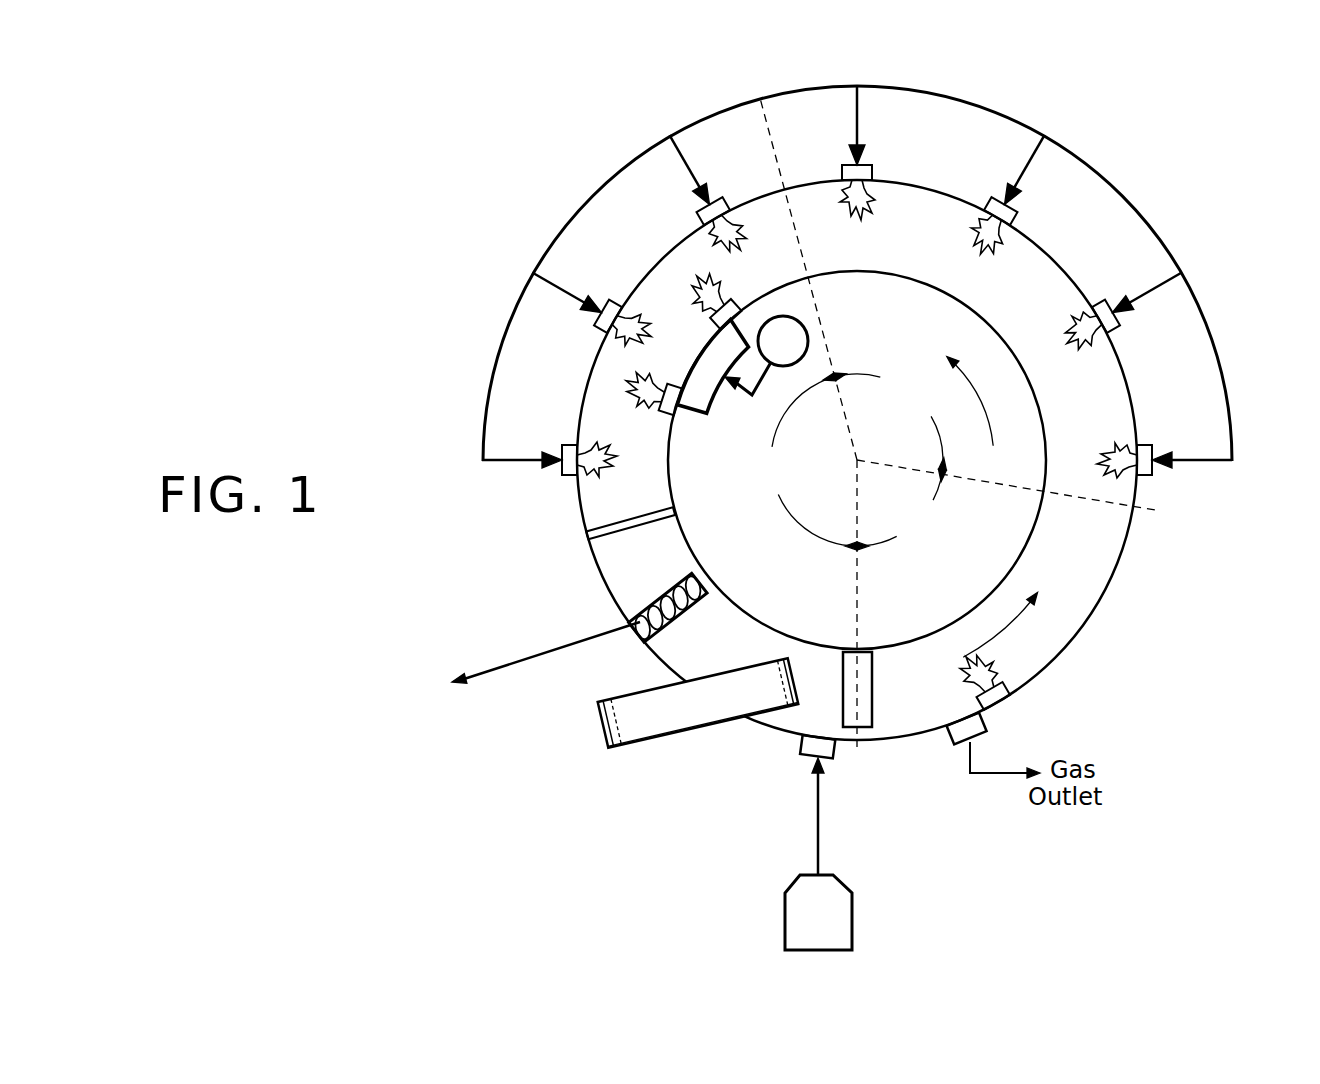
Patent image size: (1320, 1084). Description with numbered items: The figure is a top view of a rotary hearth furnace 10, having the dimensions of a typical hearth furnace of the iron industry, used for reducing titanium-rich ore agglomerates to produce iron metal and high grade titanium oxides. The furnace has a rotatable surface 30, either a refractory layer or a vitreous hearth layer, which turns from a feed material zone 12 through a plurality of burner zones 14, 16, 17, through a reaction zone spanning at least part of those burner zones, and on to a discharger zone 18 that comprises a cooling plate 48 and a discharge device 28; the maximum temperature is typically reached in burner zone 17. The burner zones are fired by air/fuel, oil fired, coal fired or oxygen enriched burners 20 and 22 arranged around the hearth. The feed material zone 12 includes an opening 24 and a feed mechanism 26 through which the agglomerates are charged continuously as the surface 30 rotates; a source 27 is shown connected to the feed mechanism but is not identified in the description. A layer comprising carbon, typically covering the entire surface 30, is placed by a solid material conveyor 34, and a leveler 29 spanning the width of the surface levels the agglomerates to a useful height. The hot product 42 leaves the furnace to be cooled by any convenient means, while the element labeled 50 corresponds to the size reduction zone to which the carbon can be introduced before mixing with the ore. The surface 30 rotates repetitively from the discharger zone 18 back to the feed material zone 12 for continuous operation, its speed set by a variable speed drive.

The furnace 10 is at (1112, 120).
The feed material zone 12 is at (903, 692).
The burner zone 14 is at (1118, 186).
The burner zone 16 is at (606, 186).
The burner zone 17 is at (603, 502).
The discharger zone 18 is at (677, 577).
The burners 20 is at (992, 250).
The burners 22 is at (517, 462).
The opening 24 is at (800, 752).
The feed mechanism 26 is at (815, 800).
The supply source 27 is at (828, 932).
The discharge device 28 is at (815, 843).
The leveler 29 is at (862, 730).
The surface 30 is at (1015, 627).
The solid material conveyor 34 is at (598, 730).
The hot product 42 is at (535, 660).
The cooling plate 48 is at (598, 522).
The size reduction zone 50 is at (652, 608).